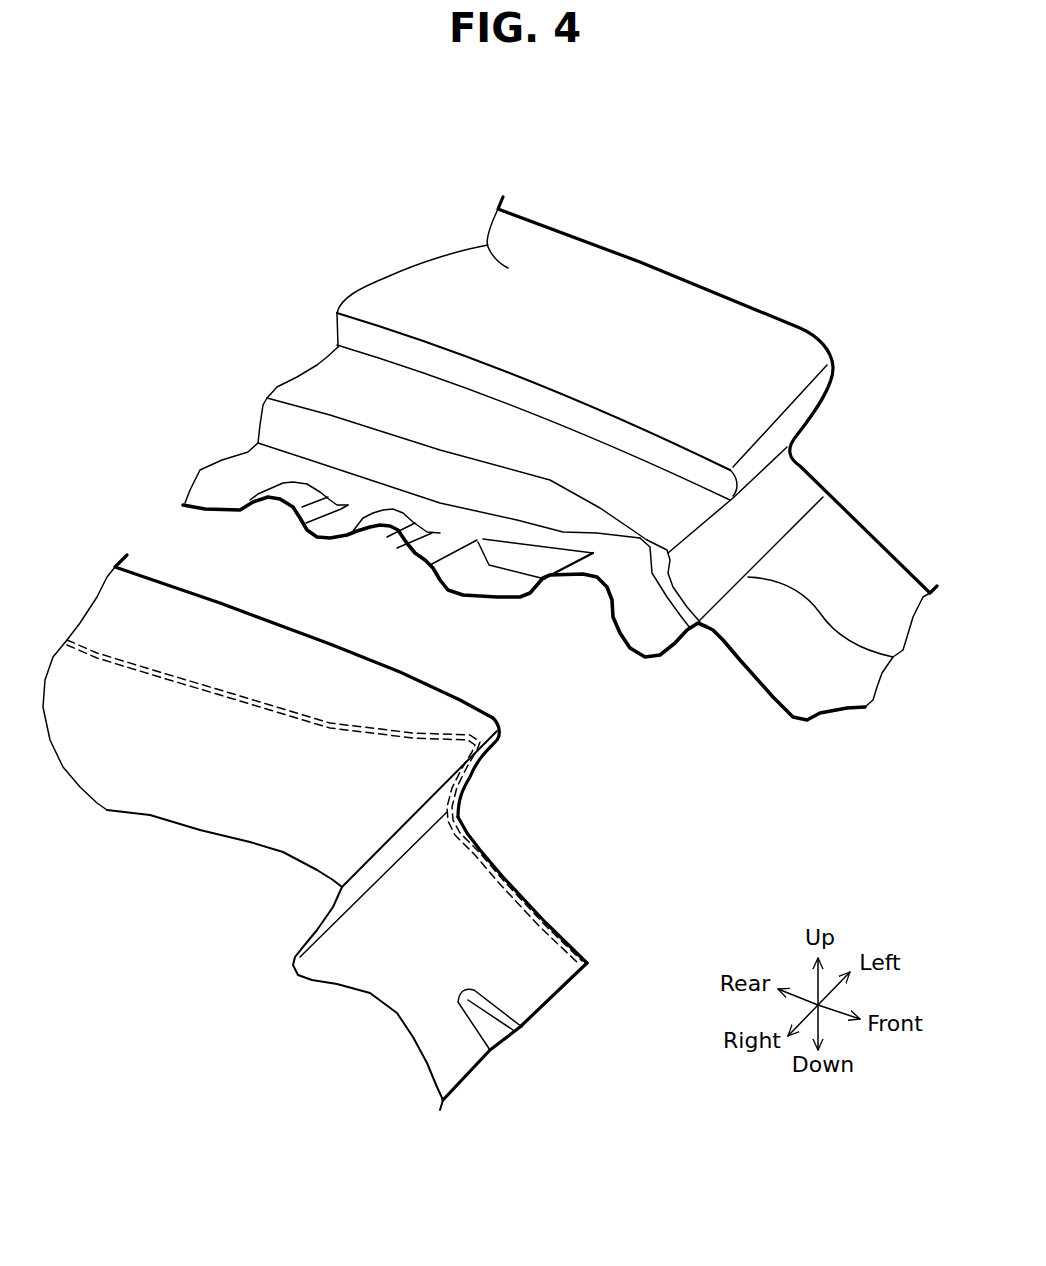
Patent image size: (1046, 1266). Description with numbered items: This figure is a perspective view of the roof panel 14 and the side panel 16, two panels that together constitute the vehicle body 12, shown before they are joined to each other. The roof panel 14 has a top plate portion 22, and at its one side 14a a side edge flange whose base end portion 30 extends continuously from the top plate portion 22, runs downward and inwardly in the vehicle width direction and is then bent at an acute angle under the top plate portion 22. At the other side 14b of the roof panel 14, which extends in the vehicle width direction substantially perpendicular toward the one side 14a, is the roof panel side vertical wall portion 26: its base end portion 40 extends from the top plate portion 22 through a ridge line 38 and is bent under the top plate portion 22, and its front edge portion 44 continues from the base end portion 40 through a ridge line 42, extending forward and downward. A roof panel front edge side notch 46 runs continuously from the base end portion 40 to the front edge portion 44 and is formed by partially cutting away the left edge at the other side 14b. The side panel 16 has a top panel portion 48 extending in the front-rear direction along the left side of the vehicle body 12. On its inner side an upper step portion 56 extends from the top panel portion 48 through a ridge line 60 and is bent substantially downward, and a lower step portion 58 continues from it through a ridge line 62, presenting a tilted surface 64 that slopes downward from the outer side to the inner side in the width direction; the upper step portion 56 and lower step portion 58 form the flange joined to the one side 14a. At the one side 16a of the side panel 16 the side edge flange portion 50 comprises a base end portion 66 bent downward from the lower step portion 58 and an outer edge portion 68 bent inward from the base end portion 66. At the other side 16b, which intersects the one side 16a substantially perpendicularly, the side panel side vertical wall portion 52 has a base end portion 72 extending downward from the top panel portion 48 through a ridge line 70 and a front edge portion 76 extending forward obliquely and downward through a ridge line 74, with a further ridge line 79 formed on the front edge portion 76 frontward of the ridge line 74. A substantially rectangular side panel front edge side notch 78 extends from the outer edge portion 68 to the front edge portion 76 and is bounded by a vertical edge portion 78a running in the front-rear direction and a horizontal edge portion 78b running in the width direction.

The vehicle body 12 is at (613, 204).
The roof panel 14 is at (200, 845).
The one side of the roof panel 14a is at (341, 634).
The other side of the roof panel 14b is at (368, 1022).
The side panel 16 is at (685, 264).
The one side of the side panel 16a is at (477, 441).
The other side of the side panel 16b is at (783, 447).
The top plate portion 22 is at (143, 783).
The roof panel side vertical wall portion 26 is at (567, 800).
The base end portion 30 is at (190, 637).
The ridge line 38 is at (427, 806).
The base end portion 40 is at (403, 840).
The ridge line 42 is at (377, 885).
The front edge portion 44 is at (453, 922).
The roof panel front edge side notch 46 is at (462, 808).
The top panel portion 48 is at (490, 242).
The side edge flange portion 50 is at (665, 353).
The side panel side vertical wall portion 52 is at (915, 432).
The upper step portion 56 is at (353, 328).
The lower step portion 58 is at (338, 380).
The ridge line 60 is at (460, 347).
The ridge line 62 is at (412, 363).
The tilted surface 64 is at (308, 388).
The base end portion 66 is at (532, 507).
The outer edge portion 68 is at (610, 563).
The ridge line 70 is at (805, 390).
The base end portion 72 is at (765, 468).
The ridge line 74 is at (750, 500).
The front edge portion 76 is at (823, 560).
The side panel front edge side notch 78 is at (700, 640).
The vertical edge portion 78a is at (755, 680).
The horizontal edge portion 78b is at (672, 633).
The ridge line 79 is at (893, 657).